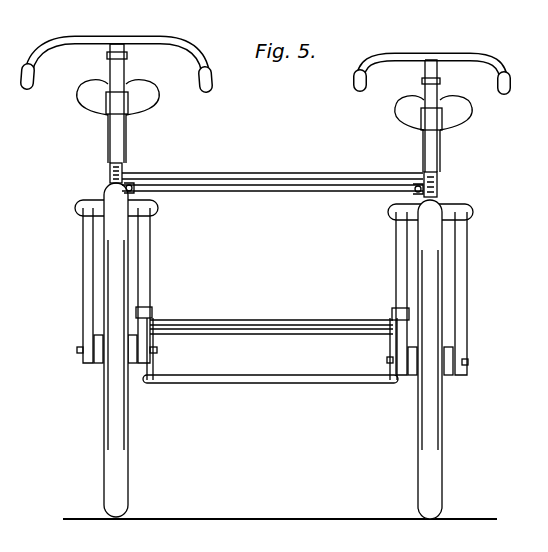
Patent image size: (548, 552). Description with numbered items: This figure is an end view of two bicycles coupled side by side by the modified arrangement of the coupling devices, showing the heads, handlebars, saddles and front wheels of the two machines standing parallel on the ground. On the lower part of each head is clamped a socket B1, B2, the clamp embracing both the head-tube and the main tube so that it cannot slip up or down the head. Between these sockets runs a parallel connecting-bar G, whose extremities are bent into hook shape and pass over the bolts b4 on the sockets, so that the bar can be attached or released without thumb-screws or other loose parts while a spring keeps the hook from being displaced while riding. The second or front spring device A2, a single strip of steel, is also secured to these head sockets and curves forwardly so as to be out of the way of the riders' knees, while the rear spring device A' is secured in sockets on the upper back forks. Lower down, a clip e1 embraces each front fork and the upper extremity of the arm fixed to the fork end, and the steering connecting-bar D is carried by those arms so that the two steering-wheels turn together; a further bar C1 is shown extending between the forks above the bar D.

The socket B1 is at (110, 172).
The socket B2 is at (440, 176).
The connecting-bar G is at (249, 156).
The bolt b4 is at (130, 194).
The second spring device A2 is at (292, 186).
The clip e1 is at (152, 312).
The lower connecting bar C1 is at (282, 324).
The rear spring device A' is at (272, 349).
The steering connecting-bar D is at (285, 379).